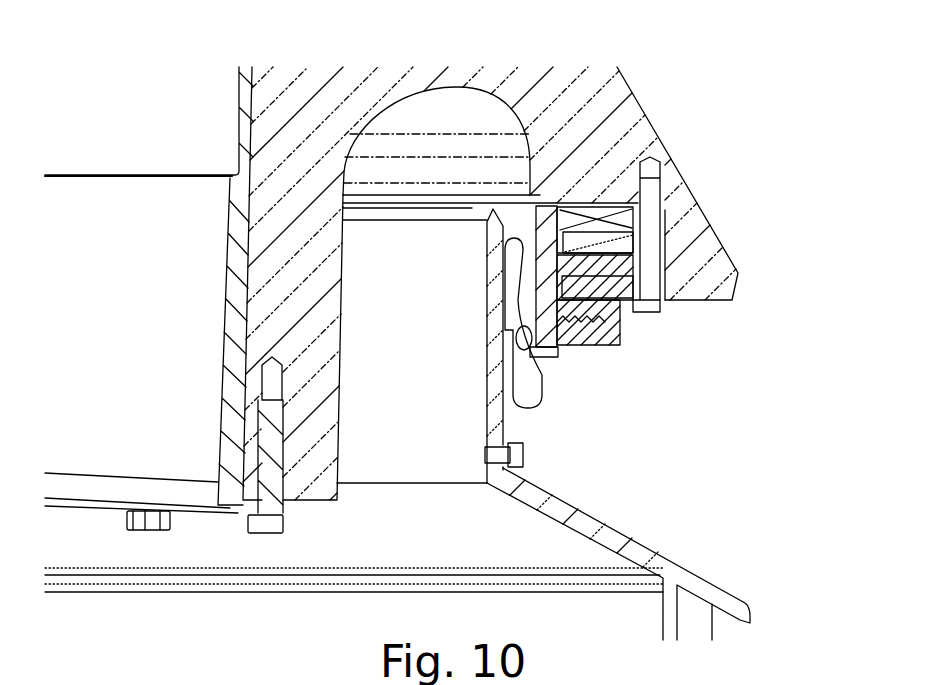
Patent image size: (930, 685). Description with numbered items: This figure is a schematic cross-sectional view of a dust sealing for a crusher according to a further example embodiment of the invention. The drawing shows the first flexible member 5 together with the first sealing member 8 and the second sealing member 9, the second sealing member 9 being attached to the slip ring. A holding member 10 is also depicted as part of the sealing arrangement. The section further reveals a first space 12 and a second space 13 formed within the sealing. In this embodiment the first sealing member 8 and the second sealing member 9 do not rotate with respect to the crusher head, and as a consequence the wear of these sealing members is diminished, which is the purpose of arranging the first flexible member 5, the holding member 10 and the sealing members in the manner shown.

The first space 12 is at (457, 122).
The first sealing member 8 is at (593, 273).
The holding member 10 is at (611, 337).
The second space 13 is at (527, 373).
The first flexible member 5 is at (542, 397).
The second sealing member 9 is at (508, 428).